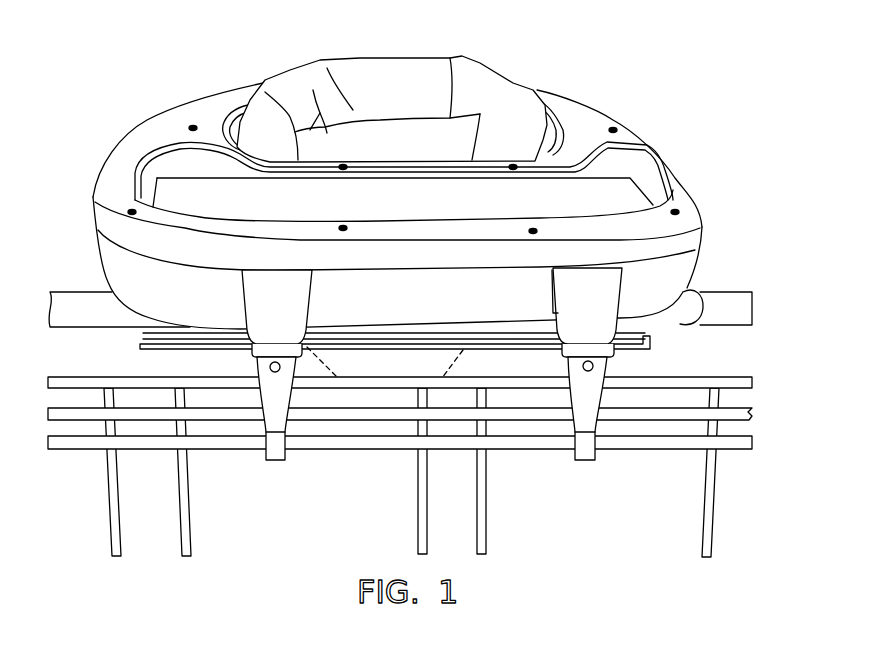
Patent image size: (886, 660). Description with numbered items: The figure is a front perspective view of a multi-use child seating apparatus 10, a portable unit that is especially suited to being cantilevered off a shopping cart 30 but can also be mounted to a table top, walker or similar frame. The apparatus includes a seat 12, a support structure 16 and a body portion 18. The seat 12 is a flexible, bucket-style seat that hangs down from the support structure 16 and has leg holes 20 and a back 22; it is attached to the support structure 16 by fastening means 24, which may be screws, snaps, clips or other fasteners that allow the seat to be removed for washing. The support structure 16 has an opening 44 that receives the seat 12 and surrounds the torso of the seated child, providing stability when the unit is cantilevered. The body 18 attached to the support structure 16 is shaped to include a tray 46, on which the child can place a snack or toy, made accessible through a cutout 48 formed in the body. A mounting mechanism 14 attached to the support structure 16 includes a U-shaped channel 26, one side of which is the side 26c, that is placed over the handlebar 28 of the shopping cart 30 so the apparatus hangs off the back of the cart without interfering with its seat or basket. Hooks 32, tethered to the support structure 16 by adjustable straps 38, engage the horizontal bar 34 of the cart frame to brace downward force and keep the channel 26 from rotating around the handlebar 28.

The multi-use child seating apparatus 10 is at (658, 102).
The seat 12 is at (470, 62).
The mounting mechanism 14 is at (100, 332).
The support structure 16 is at (196, 305).
The body portion 18 is at (293, 264).
The leg holes 20 is at (452, 370).
The back 22 is at (423, 105).
The fastening means 24 is at (193, 126).
The U-shaped channel 26 is at (199, 345).
The channel side 26c is at (148, 332).
The handlebar 28 is at (692, 290).
The shopping cart 30 is at (400, 467).
The hooks 32 is at (282, 462).
The horizontal bar 34 is at (505, 448).
The straps 38 is at (300, 298).
The opening 44 is at (312, 165).
The tray 46 is at (209, 209).
The cutout 48 is at (243, 179).